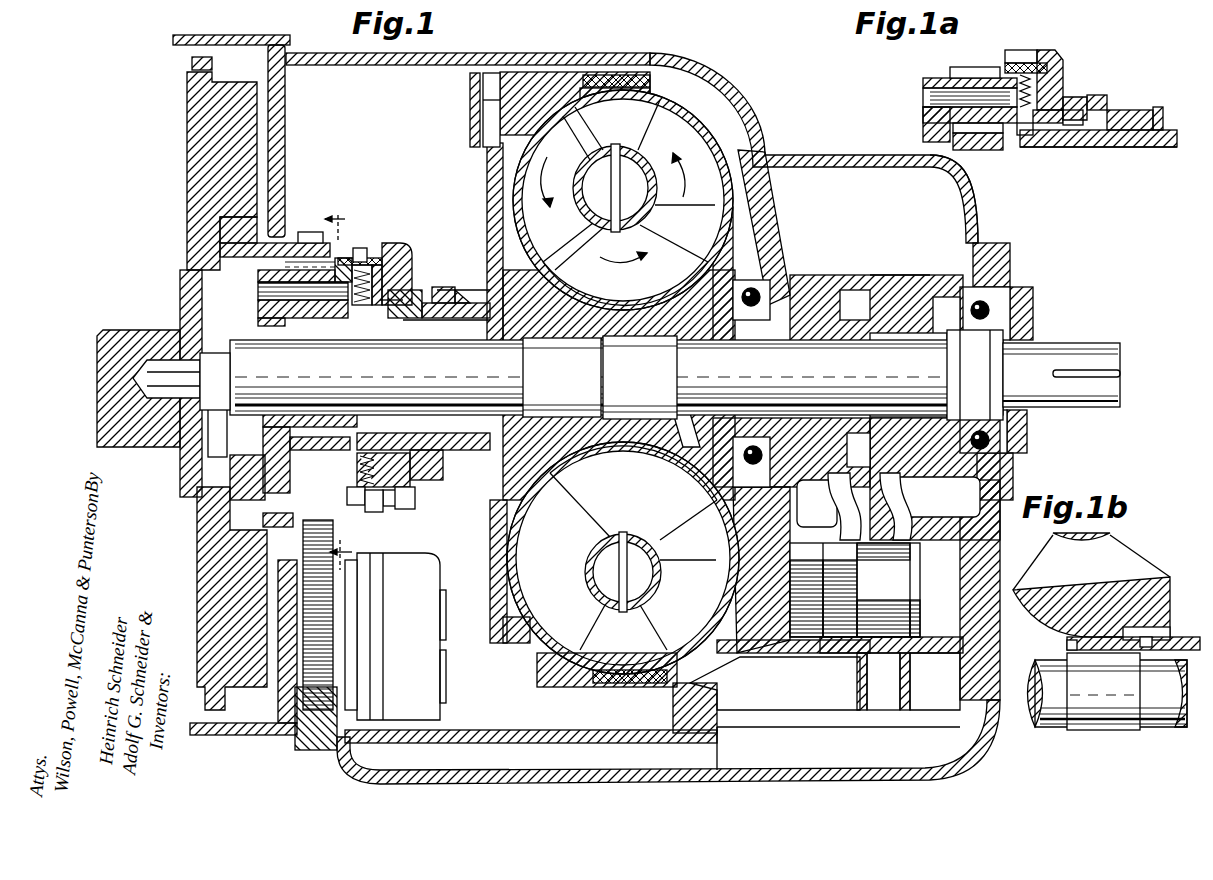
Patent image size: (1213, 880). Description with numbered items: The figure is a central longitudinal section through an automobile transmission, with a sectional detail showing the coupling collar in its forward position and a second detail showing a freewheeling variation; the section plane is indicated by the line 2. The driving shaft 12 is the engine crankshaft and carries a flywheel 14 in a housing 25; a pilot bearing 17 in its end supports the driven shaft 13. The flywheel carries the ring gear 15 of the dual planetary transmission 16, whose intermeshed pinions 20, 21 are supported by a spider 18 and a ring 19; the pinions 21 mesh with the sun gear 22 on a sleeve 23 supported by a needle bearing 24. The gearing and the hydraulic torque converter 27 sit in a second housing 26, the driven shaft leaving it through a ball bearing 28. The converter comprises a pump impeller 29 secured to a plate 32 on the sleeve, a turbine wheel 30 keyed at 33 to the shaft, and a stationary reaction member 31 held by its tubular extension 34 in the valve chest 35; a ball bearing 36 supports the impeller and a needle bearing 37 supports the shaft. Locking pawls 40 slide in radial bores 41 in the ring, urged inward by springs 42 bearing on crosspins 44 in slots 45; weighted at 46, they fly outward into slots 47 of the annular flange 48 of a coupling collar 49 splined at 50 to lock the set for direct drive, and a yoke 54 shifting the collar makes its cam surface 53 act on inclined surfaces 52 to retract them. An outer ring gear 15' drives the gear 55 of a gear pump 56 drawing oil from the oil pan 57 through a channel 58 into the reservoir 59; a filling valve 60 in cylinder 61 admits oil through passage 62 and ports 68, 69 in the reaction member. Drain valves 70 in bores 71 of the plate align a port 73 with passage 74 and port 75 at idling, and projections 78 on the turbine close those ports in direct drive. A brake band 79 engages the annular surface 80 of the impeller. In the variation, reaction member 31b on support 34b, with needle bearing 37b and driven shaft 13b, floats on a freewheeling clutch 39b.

In FIG. 1, the section line 2 is at (339, 389).
In FIG. 1, the driving shaft 12 is at (128, 447).
In FIG. 1, the driven shaft 13 is at (616, 377).
In FIG. 1, the flywheel 14 is at (190, 167).
In FIG. 1, the ring gear 15 is at (359, 254).
In FIG. 1, the outer ring gear 15' is at (307, 214).
In FIG. 1, the dual planetary transmission 16 is at (258, 290).
In FIG. 1, the pilot bearing 17 is at (183, 358).
In FIG. 1, the spider 18 is at (258, 430).
In FIG. 1A, the spider 18 is at (922, 110).
In FIG. 1, the ring 19 is at (352, 322).
In FIG. 1A, the ring 19 is at (1020, 125).
In FIG. 1, the planetary pinions 20 is at (307, 322).
In FIG. 1A, the planetary pinions 20 is at (960, 70).
In FIG. 1, the planetary pinions 21 is at (268, 470).
In FIG. 1, the sun gear 22 is at (290, 410).
In FIG. 1A, the sun gear 22 is at (980, 140).
In FIG. 1, the sleeve 23 is at (412, 322).
In FIG. 1A, the sleeve 23 is at (1168, 147).
In FIG. 1, the needle bearing 24 is at (322, 322).
In FIG. 1, the housing 25 is at (286, 140).
In FIG. 1, the housing 26 is at (388, 66).
In FIG. 1, the hydraulic torque converter 27 is at (485, 190).
In FIG. 1, the ball bearing 28 is at (990, 300).
In FIG. 1, the pump impeller 29 is at (690, 150).
In FIG. 1, the turbine wheel 30 is at (520, 226).
In FIG. 1, the reaction member 31 is at (655, 240).
In FIG. 1, the plate 32 is at (535, 676).
In FIG. 1, the key 33 is at (545, 342).
In FIG. 1, the tubular extension 34 is at (822, 300).
In FIG. 1, the valve chest 35 is at (905, 278).
In FIG. 1, the ball bearing 36 is at (757, 315).
In FIG. 1, the needle bearing 37 is at (630, 340).
In FIG. 1, the locking pawls 40 is at (355, 506).
In FIG. 1A, the locking pawls 40 is at (1030, 130).
In FIG. 1, the radial bores 41 is at (395, 490).
In FIG. 1, the springs 42 is at (418, 478).
In FIG. 1, the crosspins 44 is at (412, 505).
In FIG. 1, the longitudinal slots 45 is at (378, 513).
In FIG. 1A, the weighted inner ends 46 is at (1055, 108).
In FIG. 1, the slots 47 is at (395, 507).
In FIG. 1A, the slots 47 is at (1020, 50).
In FIG. 1, the annular flange 48 is at (400, 244).
In FIG. 1A, the annular flange 48 is at (1050, 52).
In FIG. 1, the coupling collar 49 is at (444, 287).
In FIG. 1A, the coupling collar 49 is at (1100, 96).
In FIG. 1, the spline 50 is at (452, 322).
In FIG. 1A, the spline 50 is at (1123, 132).
In FIG. 1, the inclined surfaces 52 is at (388, 322).
In FIG. 1A, the inclined surfaces 52 is at (1065, 125).
In FIG. 1, the inclined annular cam surface 53 is at (408, 292).
In FIG. 1A, the inclined annular cam surface 53 is at (1078, 97).
In FIG. 1, the yoke 54 is at (466, 303).
In FIG. 1A, the yoke 54 is at (1158, 107).
In FIG. 1, the driving gear 55 is at (335, 622).
In FIG. 1, the gear pump 56 is at (425, 576).
In FIG. 1, the oil pan 57 is at (340, 770).
In FIG. 1, the channel 58 is at (545, 740).
In FIG. 1, the oil reservoir 59 is at (958, 212).
In FIG. 1, the filling valve 60 is at (855, 590).
In FIG. 1, the cylinder 61 is at (975, 556).
In FIG. 1, the passage 62 is at (870, 506).
In FIG. 1, the port 68 is at (878, 425).
In FIG. 1, the port 69 is at (686, 425).
In FIG. 1B, the port 69 is at (1150, 652).
In FIG. 1, the drain valves 70 is at (482, 101).
In FIG. 1, the bore 71 is at (482, 76).
In FIG. 1, the port 73 is at (472, 130).
In FIG. 1, the passage 74 is at (510, 105).
In FIG. 1, the port 75 is at (548, 142).
In FIG. 1, the projections 78 is at (540, 182).
In FIG. 1, the brake band 79 is at (652, 80).
In FIG. 1, the flat annular surface 80 is at (652, 97).
In FIG. 1B, the driven shaft 13b is at (1152, 728).
In FIG. 1B, the reaction member 31b is at (1168, 575).
In FIG. 1B, the stationary tubular support 34b is at (1188, 637).
In FIG. 1B, the needle bearing 37b is at (1067, 648).
In FIG. 1B, the freewheeling clutch 39b is at (1147, 627).